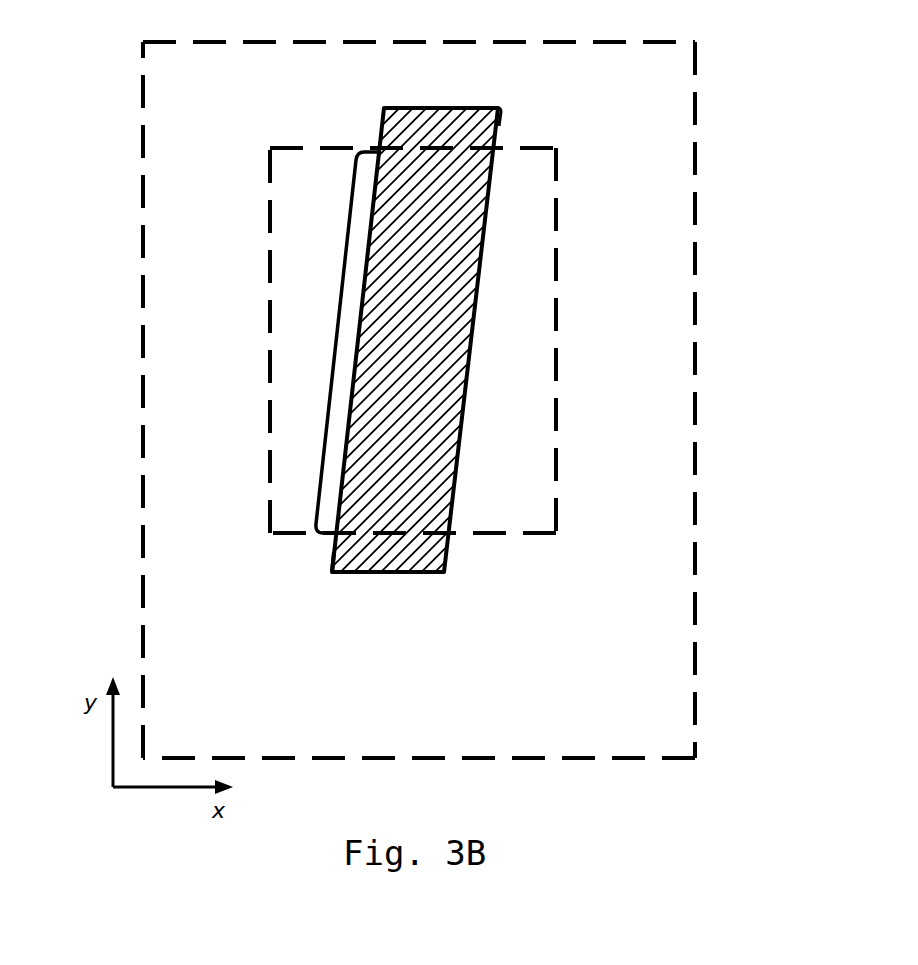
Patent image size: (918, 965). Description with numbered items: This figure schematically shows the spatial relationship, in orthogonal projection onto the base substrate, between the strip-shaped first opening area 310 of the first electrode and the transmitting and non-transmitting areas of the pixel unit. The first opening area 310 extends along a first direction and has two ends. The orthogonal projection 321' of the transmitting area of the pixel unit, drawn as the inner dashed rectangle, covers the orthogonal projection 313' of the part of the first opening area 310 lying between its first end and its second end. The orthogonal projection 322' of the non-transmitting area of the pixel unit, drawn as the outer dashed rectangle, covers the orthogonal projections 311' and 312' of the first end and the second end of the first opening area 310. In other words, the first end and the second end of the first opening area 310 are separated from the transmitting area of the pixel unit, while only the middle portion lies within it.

The first opening area 310 is at (443, 562).
The orthogonal projection of the first end 311′ is at (498, 128).
The orthogonal projection of the second end 312′ is at (327, 552).
The orthogonal projection of the part of the first opening area between the first en 313′ is at (333, 335).
The orthogonal projection of the transmitting area 321′ is at (556, 297).
The orthogonal projection of the non-transmitting area 322′ is at (158, 175).